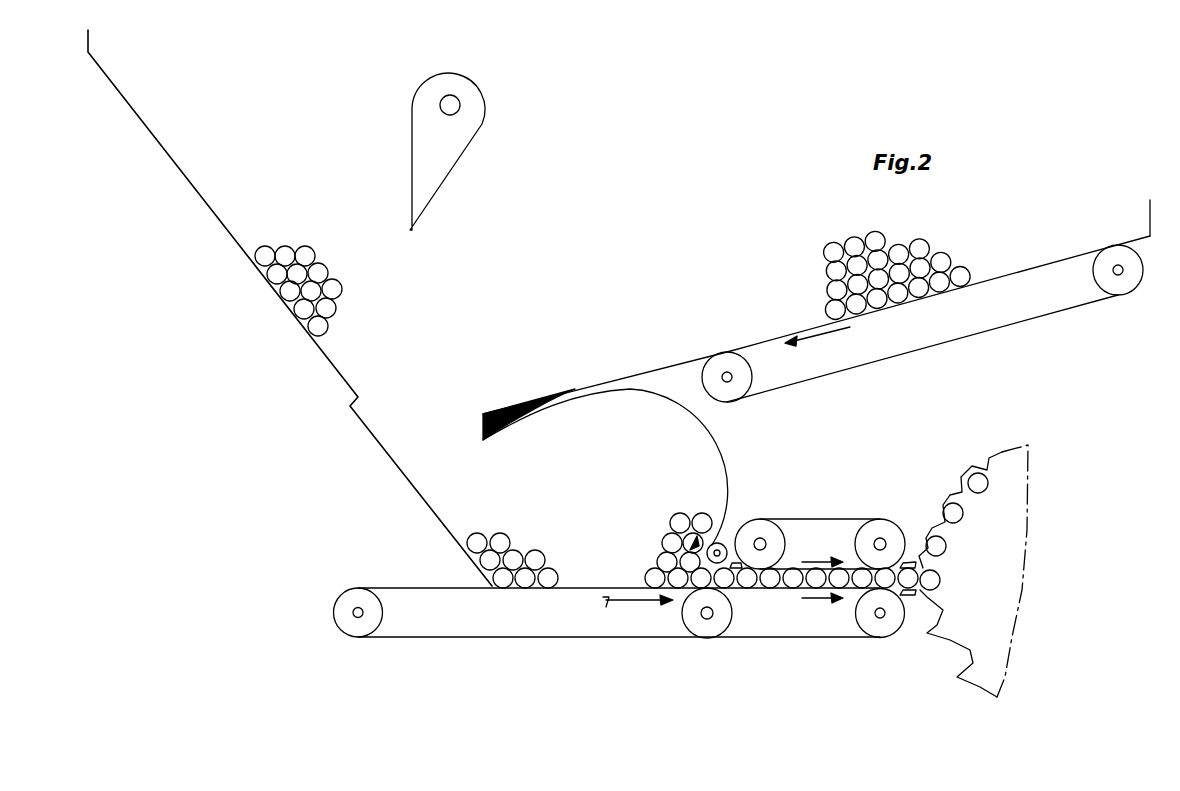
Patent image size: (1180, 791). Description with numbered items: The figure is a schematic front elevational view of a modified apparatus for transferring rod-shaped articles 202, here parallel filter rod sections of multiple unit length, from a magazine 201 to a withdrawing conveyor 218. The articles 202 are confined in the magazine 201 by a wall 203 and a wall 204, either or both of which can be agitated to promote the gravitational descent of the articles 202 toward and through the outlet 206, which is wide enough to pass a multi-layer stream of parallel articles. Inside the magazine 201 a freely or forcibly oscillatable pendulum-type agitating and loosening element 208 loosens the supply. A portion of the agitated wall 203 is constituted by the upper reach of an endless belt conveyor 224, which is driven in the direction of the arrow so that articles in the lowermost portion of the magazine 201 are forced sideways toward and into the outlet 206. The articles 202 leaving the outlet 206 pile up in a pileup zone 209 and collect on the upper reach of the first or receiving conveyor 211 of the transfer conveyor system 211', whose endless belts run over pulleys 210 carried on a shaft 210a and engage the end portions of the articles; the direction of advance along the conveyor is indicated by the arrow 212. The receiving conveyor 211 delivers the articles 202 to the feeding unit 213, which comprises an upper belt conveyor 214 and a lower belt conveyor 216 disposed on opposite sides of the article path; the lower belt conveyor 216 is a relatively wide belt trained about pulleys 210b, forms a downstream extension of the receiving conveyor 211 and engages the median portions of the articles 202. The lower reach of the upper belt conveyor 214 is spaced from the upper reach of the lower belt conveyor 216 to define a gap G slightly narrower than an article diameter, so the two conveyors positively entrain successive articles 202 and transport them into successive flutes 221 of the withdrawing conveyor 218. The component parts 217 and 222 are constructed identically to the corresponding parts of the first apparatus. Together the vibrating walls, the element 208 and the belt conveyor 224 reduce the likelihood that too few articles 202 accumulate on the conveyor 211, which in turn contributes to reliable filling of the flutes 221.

The magazine 201 is at (190, 148).
The articles 202 is at (309, 254).
The wall 203 is at (622, 374).
The wall 204 is at (340, 376).
The outlet 206 is at (438, 488).
The pendulum-type agitating and loosening element 208 is at (477, 113).
The pileup zone 209 is at (688, 437).
The pulleys 210 is at (361, 628).
The shaft 210a is at (705, 615).
The pulleys 210b is at (728, 608).
The first or receiving conveyor 211 is at (607, 628).
The transfer conveyor system 211' is at (556, 720).
The conveyor section 212 is at (638, 611).
The feeding unit 213 is at (783, 642).
The upper belt conveyor 214 is at (845, 530).
The lower belt conveyor 216 is at (812, 625).
The component part 217 is at (910, 563).
The withdrawing conveyor 218 is at (1015, 518).
The flutes 221 is at (962, 653).
The component part 222 is at (720, 545).
The endless belt conveyor 224 is at (987, 302).
The gap G is at (783, 567).